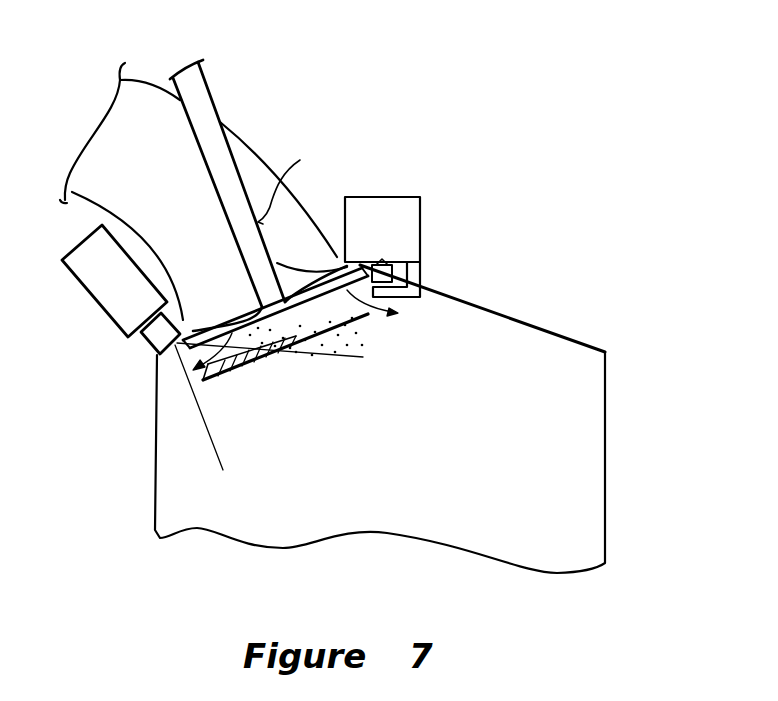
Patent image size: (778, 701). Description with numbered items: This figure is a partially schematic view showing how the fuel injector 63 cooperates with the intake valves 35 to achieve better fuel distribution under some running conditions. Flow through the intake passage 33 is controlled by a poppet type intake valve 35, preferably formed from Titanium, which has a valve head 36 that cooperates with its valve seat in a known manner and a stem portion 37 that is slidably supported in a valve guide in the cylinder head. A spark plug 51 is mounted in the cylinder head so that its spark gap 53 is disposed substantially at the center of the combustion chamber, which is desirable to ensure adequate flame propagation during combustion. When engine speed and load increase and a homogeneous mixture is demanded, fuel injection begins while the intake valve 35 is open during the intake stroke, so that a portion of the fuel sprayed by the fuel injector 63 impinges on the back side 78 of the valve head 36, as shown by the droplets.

The intake passage 33 is at (146, 86).
The intake valve 35 is at (212, 92).
The stem portion 37 is at (294, 179).
The spark plug 51 is at (420, 217).
The spark gap 53 is at (395, 280).
The valve head 36 is at (363, 317).
The back side 78 is at (308, 305).
The fuel injector 63 is at (100, 305).